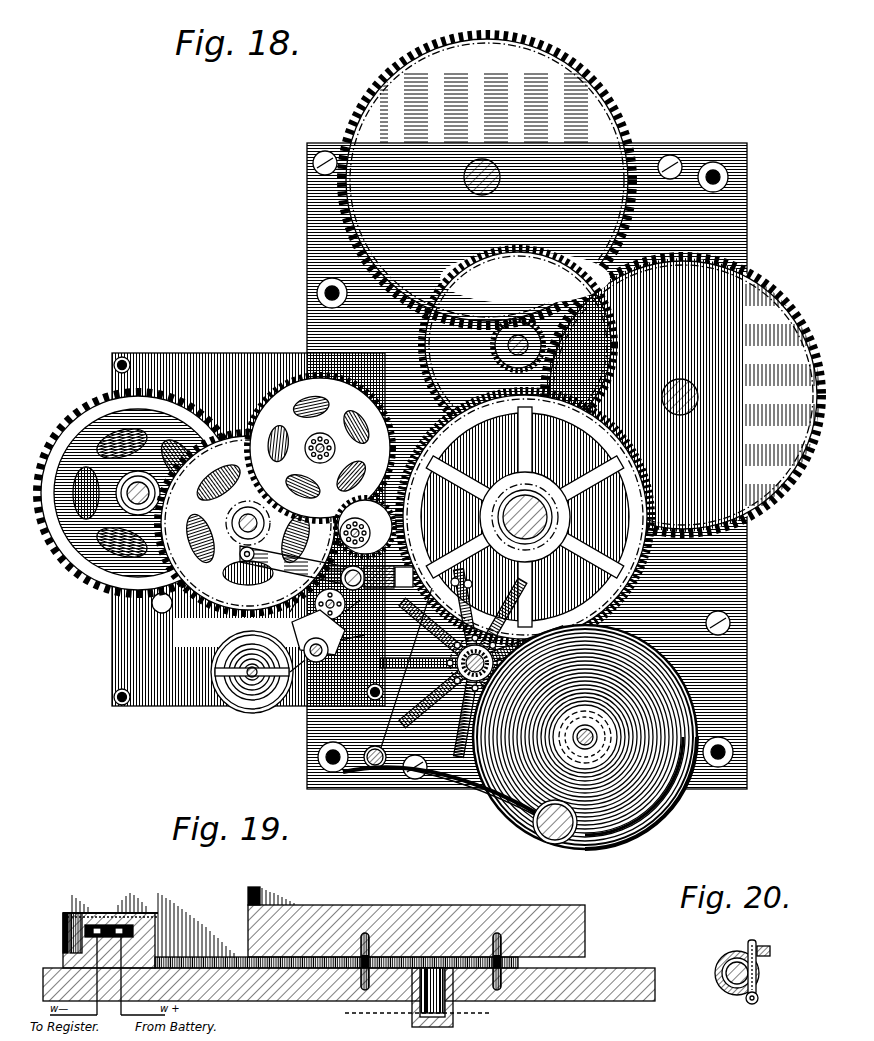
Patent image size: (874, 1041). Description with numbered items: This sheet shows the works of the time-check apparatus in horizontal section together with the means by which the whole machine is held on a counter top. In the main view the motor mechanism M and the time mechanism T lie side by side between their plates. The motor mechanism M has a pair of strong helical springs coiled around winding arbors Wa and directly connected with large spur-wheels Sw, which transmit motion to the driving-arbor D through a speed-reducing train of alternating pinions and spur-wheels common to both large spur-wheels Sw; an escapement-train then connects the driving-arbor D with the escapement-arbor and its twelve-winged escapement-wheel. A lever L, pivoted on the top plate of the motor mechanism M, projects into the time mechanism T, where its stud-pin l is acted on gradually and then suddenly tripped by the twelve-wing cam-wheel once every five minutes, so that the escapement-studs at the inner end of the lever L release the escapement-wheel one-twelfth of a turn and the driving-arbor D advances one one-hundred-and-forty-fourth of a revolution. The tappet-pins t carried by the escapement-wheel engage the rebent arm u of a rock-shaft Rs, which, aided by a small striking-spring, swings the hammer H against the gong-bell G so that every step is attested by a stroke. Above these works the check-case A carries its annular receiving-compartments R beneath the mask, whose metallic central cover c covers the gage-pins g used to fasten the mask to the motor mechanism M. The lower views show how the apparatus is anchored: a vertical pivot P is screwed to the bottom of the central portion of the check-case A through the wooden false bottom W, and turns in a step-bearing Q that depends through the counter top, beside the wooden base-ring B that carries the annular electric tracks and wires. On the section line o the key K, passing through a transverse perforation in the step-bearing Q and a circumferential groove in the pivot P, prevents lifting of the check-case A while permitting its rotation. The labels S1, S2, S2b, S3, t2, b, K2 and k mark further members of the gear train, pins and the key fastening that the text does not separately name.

In FIG. 18, the motor mechanism M is at (307, 222).
In FIG. 18, the large gear wheel S1 is at (487, 180).
In FIG. 18, the second gear wheel S2 is at (770, 385).
In FIG. 18, the large spur-wheels Sw is at (595, 120).
In FIG. 18, the winding arbors Wa is at (500, 181).
In FIG. 18, the driving-arbor D is at (525, 517).
In FIG. 18, the time mechanism T is at (118, 585).
In FIG. 18, the tappet-pins t is at (248, 523).
In FIG. 18, the pawl block t2 is at (407, 577).
In FIG. 18, the stud-pin l is at (230, 556).
In FIG. 18, the lever L is at (317, 568).
In FIG. 19, the lever L is at (109, 899).
In FIG. 18, the receiving-compartments R is at (473, 661).
In FIG. 19, the receiving-compartments R is at (196, 923).
In FIG. 18, the central cover c is at (453, 574).
In FIG. 18, the pin b is at (467, 575).
In FIG. 18, the gong-bell G is at (585, 737).
In FIG. 18, the hammer H is at (460, 805).
In FIG. 18, the rebent arm u is at (390, 718).
In FIG. 18, the rock-shaft Rs is at (375, 768).
In FIG. 18, the screw S2b is at (335, 772).
In FIG. 18, the intermediate wheel S3 is at (518, 345).
In FIG. 19, the check-case A is at (70, 902).
In FIG. 19, the gage-pins g is at (107, 964).
In FIG. 19, the base-ring B is at (66, 950).
In FIG. 19, the wooden false bottom W is at (450, 924).
In FIG. 19, the key K is at (271, 894).
In FIG. 20, the key K is at (760, 973).
In FIG. 19, the key bar K2 is at (480, 1026).
In FIG. 19, the step-bearing Q is at (432, 1004).
In FIG. 20, the step-bearing Q is at (716, 974).
In FIG. 19, the pivot P is at (432, 990).
In FIG. 20, the pivot P is at (728, 988).
In FIG. 19, the section line o is at (420, 1013).
In FIG. 20, the key pin k is at (784, 934).